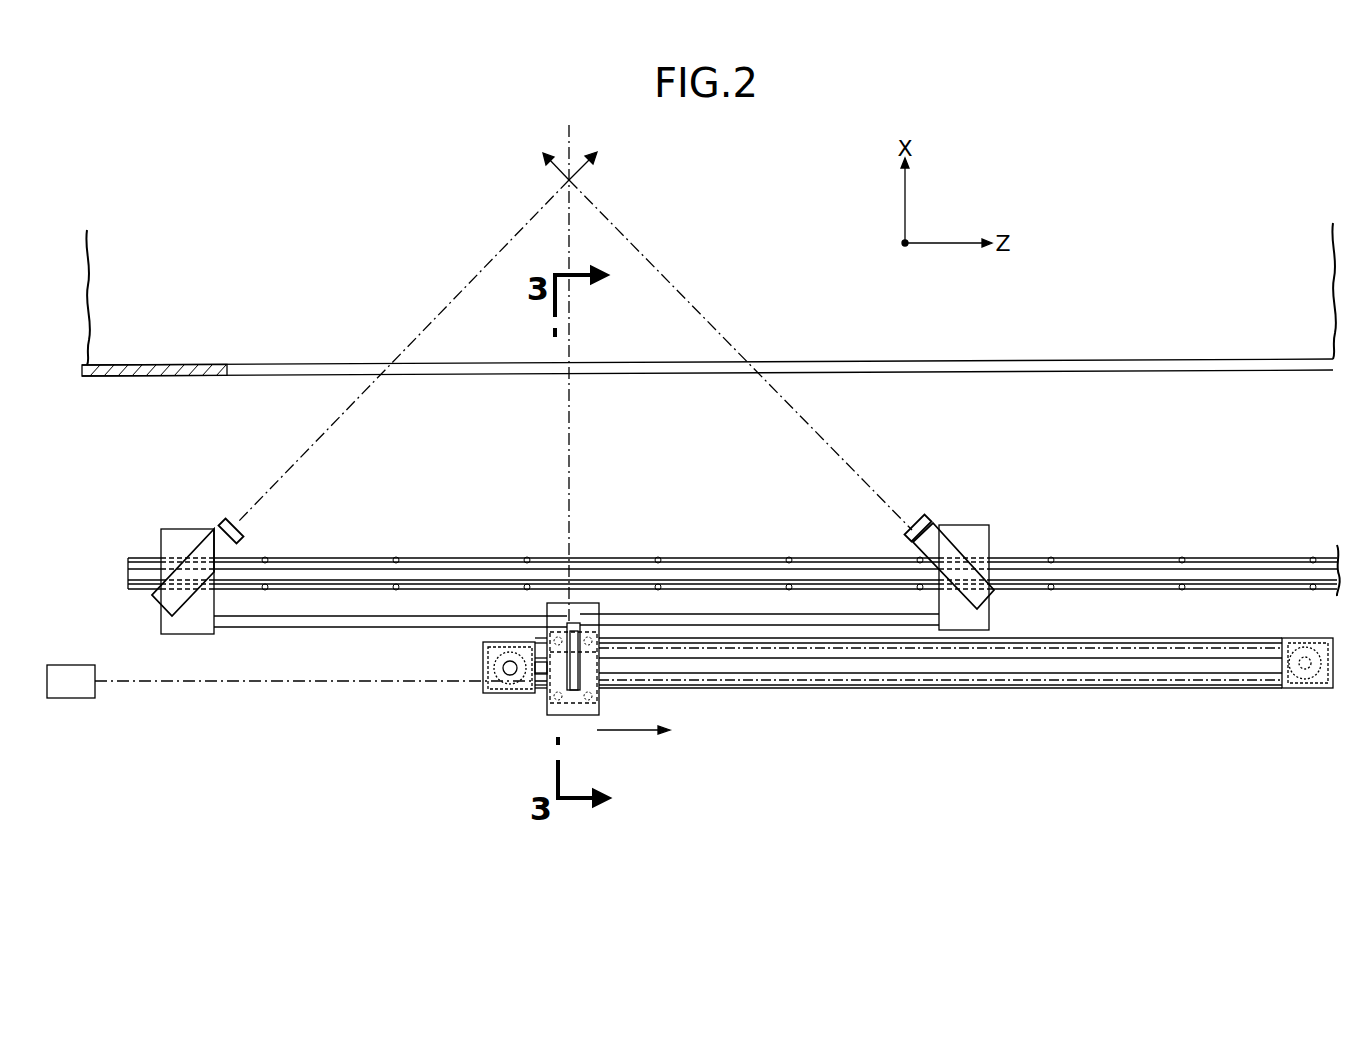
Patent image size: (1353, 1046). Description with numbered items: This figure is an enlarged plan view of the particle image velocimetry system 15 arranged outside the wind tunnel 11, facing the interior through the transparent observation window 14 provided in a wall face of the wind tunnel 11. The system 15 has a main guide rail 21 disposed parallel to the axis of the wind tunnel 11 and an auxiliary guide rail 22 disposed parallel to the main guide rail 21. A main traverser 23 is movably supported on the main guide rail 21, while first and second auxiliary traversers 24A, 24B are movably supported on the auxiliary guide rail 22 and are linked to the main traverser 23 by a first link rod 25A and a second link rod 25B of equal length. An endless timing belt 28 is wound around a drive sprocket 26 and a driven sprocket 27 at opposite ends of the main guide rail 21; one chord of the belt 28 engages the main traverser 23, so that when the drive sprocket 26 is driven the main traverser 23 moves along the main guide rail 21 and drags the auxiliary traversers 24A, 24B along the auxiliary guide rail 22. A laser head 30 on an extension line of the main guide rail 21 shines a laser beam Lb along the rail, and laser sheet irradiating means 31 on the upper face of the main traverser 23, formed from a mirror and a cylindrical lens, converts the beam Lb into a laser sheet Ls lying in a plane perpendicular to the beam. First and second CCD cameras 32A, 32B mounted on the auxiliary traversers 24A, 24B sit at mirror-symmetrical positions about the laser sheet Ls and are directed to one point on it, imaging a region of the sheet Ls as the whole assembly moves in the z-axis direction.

The wind tunnel 11 is at (165, 385).
The observation window 14 is at (468, 372).
The particle image velocimetry system 15 is at (900, 712).
The main guide rail 21 is at (873, 663).
The auxiliary guide rail 22 is at (752, 573).
The main traverser 23 is at (575, 712).
The first auxiliary traverser 24A is at (173, 540).
The second auxiliary traverser 24B is at (975, 540).
The first link rod 25A is at (397, 625).
The second link rod 25B is at (838, 617).
The drive sprocket 26 is at (495, 693).
The driven sprocket 27 is at (1305, 688).
The endless timing belt 28 is at (1025, 680).
The laser head 30 is at (70, 690).
The laser sheet irradiating means 31 is at (573, 690).
The first CCD camera 32A is at (226, 548).
The second CCD camera 32B is at (930, 530).
The laser sheet Ls is at (578, 488).
The laser beam Lb is at (297, 682).